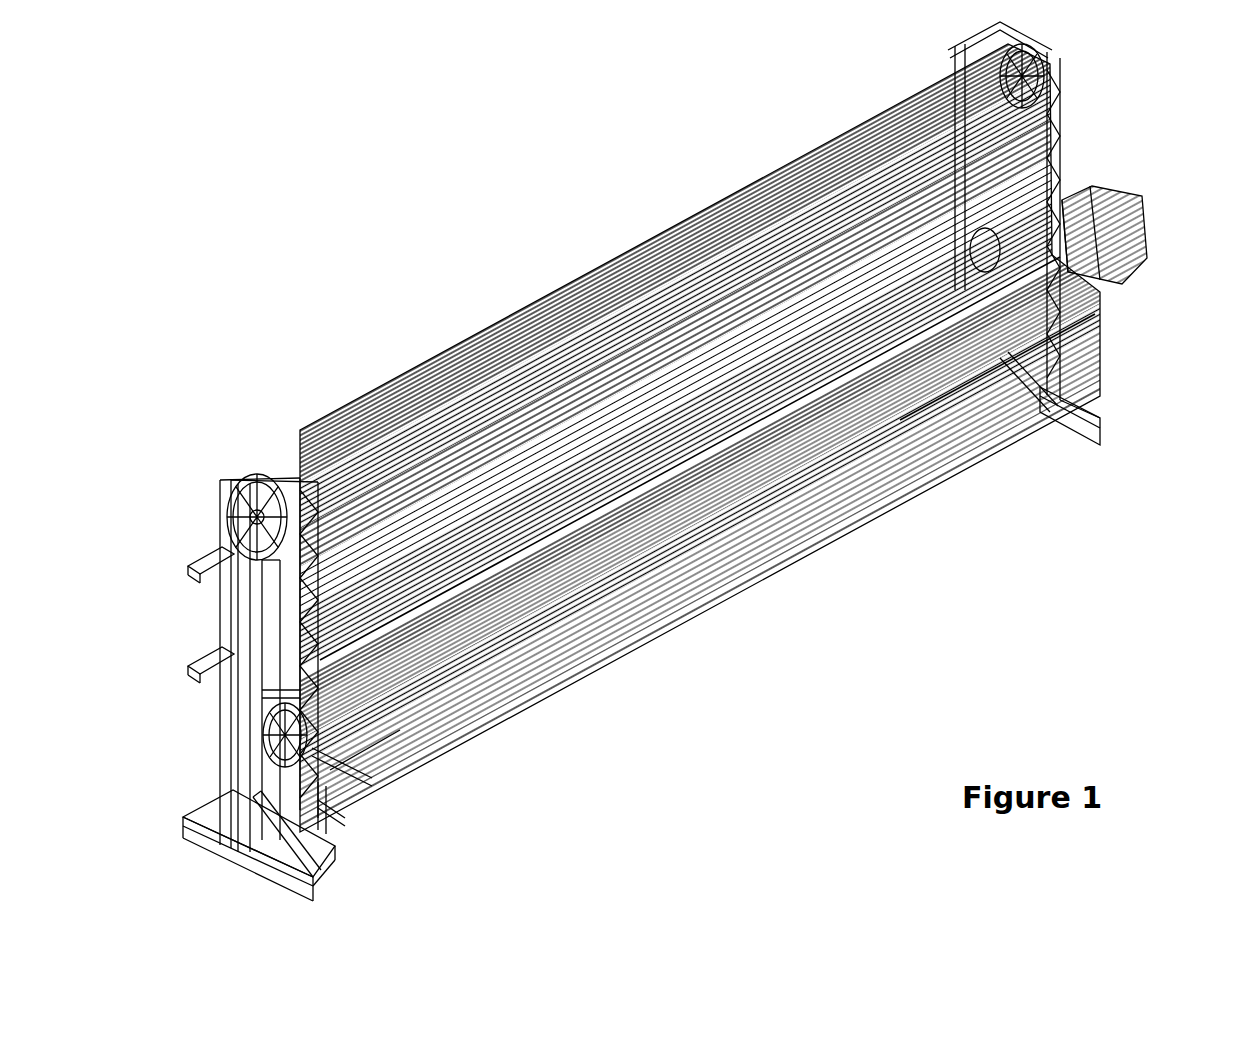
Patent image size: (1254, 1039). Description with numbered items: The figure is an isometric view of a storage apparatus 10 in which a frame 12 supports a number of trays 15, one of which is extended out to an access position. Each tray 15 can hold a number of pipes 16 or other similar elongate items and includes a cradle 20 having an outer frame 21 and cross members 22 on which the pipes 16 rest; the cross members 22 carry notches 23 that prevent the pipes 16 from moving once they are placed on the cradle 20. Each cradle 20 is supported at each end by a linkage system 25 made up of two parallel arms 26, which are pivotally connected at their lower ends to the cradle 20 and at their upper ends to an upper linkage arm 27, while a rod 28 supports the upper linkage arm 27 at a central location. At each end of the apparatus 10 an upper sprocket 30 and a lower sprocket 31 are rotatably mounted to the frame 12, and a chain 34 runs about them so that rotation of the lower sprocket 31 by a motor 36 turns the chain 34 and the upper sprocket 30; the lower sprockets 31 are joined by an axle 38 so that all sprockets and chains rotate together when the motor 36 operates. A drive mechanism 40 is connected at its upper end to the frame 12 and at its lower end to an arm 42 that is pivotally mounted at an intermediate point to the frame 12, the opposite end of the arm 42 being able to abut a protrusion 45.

The apparatus 10 is at (310, 301).
The frame 12 is at (262, 710).
The tray 15 is at (674, 665).
The pipe 16 is at (730, 568).
The cradle 20 is at (1087, 318).
The outer frame 21 is at (850, 380).
The cross member 22 is at (770, 392).
The notch 23 is at (795, 400).
The linkage system 25 is at (362, 790).
The parallel arm 26 is at (323, 803).
The upper linkage arm 27 is at (322, 753).
The rod 28 is at (322, 800).
The upper sprocket 30 is at (226, 502).
The lower sprocket 31 is at (278, 740).
The chain 34 is at (236, 600).
The motor 36 is at (1133, 226).
The axle 38 is at (986, 366).
The drive mechanism 40 is at (262, 656).
The arm 42 is at (265, 692).
The protrusion 45 is at (287, 803).